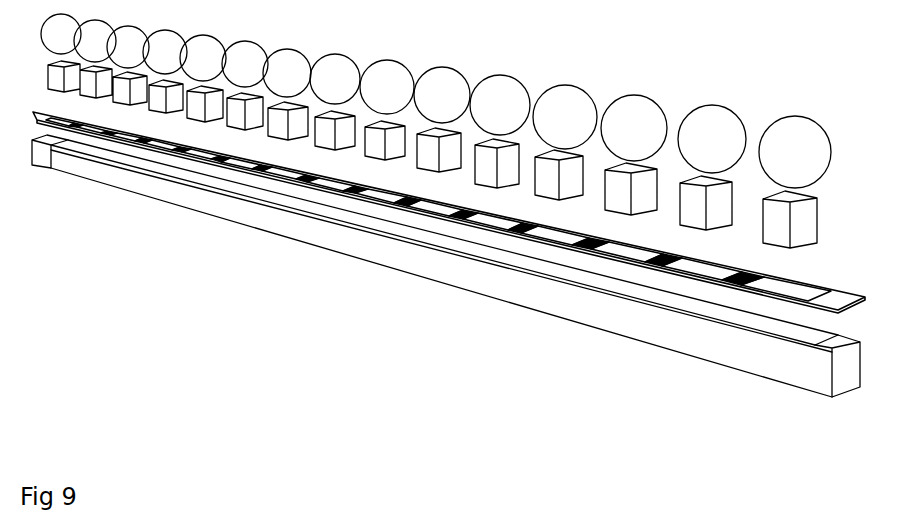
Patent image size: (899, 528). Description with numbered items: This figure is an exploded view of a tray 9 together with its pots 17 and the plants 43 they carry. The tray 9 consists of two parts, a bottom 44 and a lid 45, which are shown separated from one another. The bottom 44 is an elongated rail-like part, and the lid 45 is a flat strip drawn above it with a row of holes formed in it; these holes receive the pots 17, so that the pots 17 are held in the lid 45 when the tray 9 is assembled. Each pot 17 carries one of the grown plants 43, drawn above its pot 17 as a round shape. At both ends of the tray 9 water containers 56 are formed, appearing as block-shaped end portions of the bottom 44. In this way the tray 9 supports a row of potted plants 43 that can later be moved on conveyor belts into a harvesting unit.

The tray 9 is at (580, 342).
The pots 17 is at (333, 145).
The grown plants 43 is at (625, 107).
The bottom 44 is at (432, 265).
The lid 45 is at (828, 292).
The water containers 56 is at (50, 146).